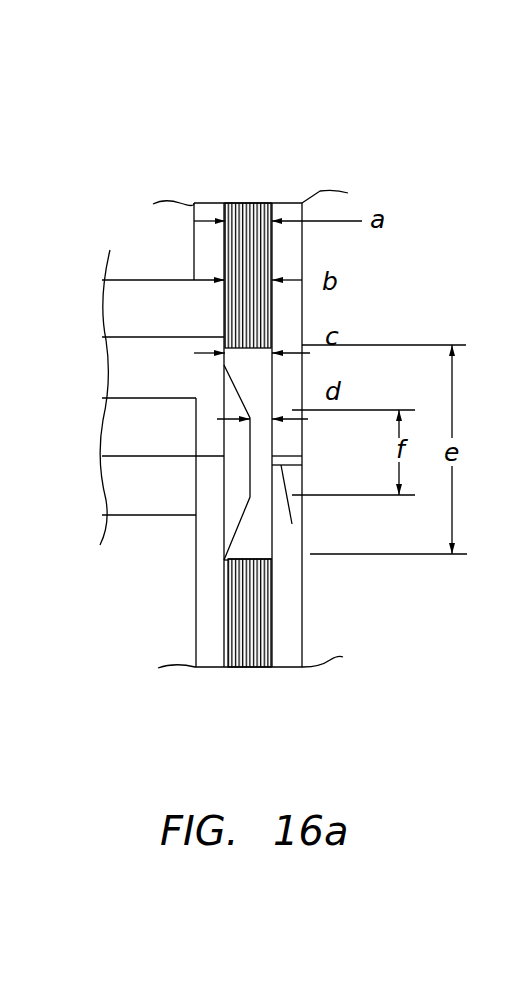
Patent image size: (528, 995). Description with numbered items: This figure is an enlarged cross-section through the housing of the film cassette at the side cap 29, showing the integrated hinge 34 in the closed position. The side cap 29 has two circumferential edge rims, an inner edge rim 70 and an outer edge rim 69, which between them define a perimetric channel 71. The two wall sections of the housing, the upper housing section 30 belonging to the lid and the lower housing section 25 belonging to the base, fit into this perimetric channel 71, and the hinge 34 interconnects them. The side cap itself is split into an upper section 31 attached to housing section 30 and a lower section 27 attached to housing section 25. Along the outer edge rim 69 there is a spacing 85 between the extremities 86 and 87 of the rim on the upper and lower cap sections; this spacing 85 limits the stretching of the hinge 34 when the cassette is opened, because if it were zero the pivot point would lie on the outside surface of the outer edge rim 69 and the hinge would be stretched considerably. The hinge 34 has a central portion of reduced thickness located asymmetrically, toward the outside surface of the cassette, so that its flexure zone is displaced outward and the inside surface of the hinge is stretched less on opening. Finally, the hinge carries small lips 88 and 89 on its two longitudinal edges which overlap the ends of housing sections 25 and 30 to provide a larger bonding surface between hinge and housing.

The side cap 29 is at (104, 193).
The edge rim 70 is at (204, 204).
The housing section 30 is at (245, 203).
The outer edge rim 69 is at (287, 210).
The upper section of side cap 31 is at (141, 250).
The integrated hinge 34 is at (222, 398).
The perimetric channel 71 is at (197, 513).
The lower section of side cap 27 is at (123, 648).
The lip 88 is at (227, 563).
The housing section 25 is at (262, 664).
The extremity of outer edge rim 86 is at (281, 456).
The spacing 85 is at (303, 465).
The extremity of outer edge rim 87 is at (292, 524).
The lip 89 is at (302, 563).